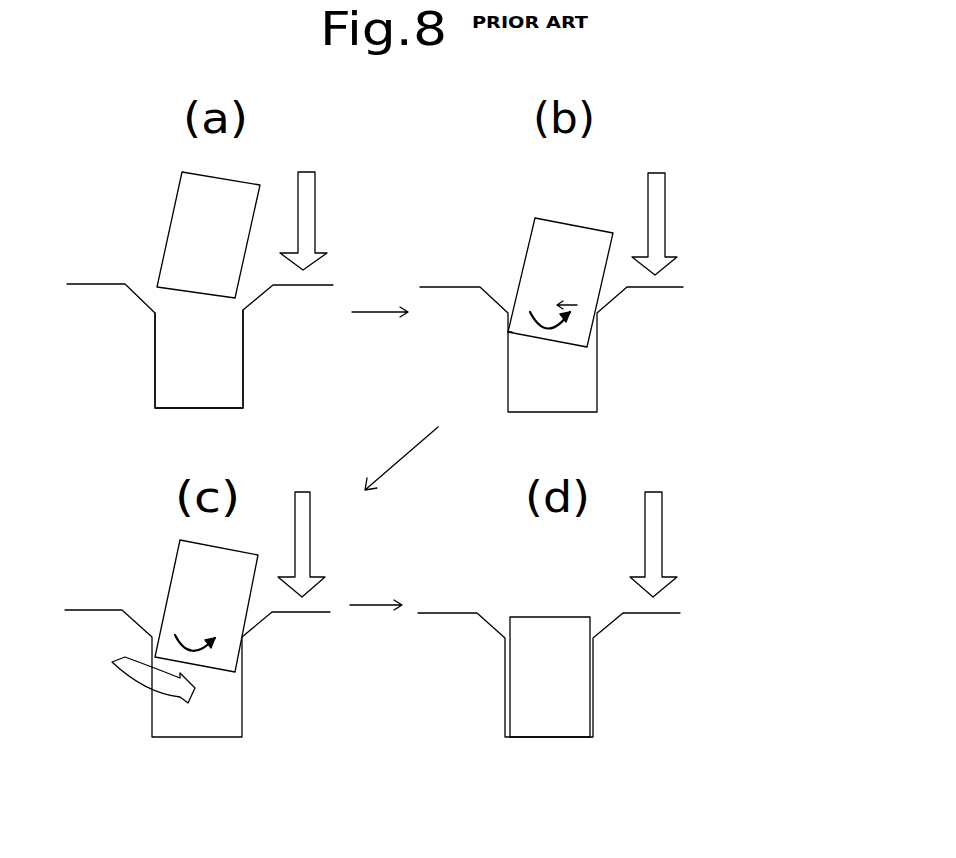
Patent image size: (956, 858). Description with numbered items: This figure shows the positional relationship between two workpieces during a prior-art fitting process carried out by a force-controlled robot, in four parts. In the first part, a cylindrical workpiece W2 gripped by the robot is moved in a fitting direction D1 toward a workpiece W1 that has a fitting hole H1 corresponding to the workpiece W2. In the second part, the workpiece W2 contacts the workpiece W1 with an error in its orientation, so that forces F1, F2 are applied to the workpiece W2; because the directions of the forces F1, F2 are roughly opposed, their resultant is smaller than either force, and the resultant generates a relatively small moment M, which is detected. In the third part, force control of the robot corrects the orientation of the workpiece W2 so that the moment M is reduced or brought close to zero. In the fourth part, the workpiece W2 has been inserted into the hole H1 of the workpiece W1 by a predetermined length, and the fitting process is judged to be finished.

The workpiece W1 is at (95, 293).
The cylindrical workpiece W2 is at (185, 208).
The fitting direction D1 is at (310, 215).
The fitting hole H1 is at (217, 368).
The force F1 is at (520, 332).
The force F2 is at (580, 307).
The moment M is at (595, 337).